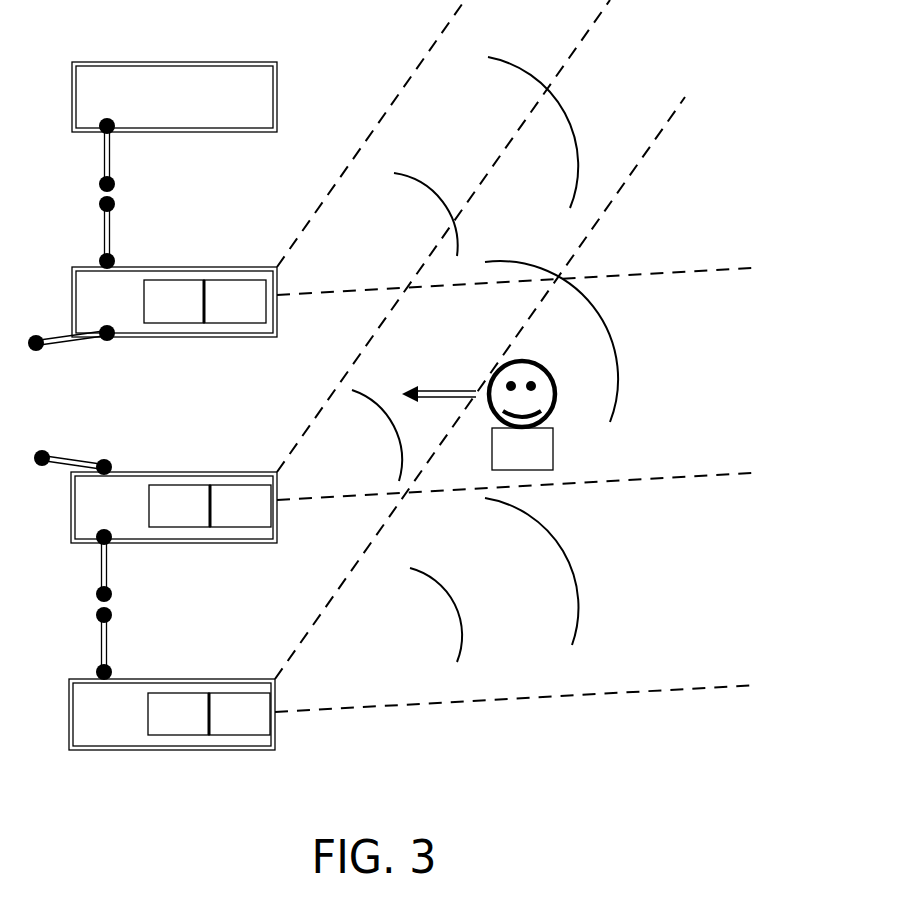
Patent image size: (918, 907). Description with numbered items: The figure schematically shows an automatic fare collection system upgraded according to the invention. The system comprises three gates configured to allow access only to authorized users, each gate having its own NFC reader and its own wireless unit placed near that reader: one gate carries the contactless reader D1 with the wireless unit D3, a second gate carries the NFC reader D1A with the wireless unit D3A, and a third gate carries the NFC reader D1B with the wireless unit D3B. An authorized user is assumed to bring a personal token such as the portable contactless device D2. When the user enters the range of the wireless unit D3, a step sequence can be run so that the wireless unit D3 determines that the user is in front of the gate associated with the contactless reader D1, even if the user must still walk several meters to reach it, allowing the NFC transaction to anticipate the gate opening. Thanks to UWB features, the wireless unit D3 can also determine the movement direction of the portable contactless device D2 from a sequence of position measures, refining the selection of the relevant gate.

The NFC reader D1A is at (174, 301).
The wireless unit D3A is at (235, 301).
The contactless reader D1 is at (179, 506).
The wireless unit D3 is at (240, 506).
The NFC reader D1B is at (178, 714).
The wireless unit D3B is at (239, 714).
The portable contactless device D2 is at (522, 415).